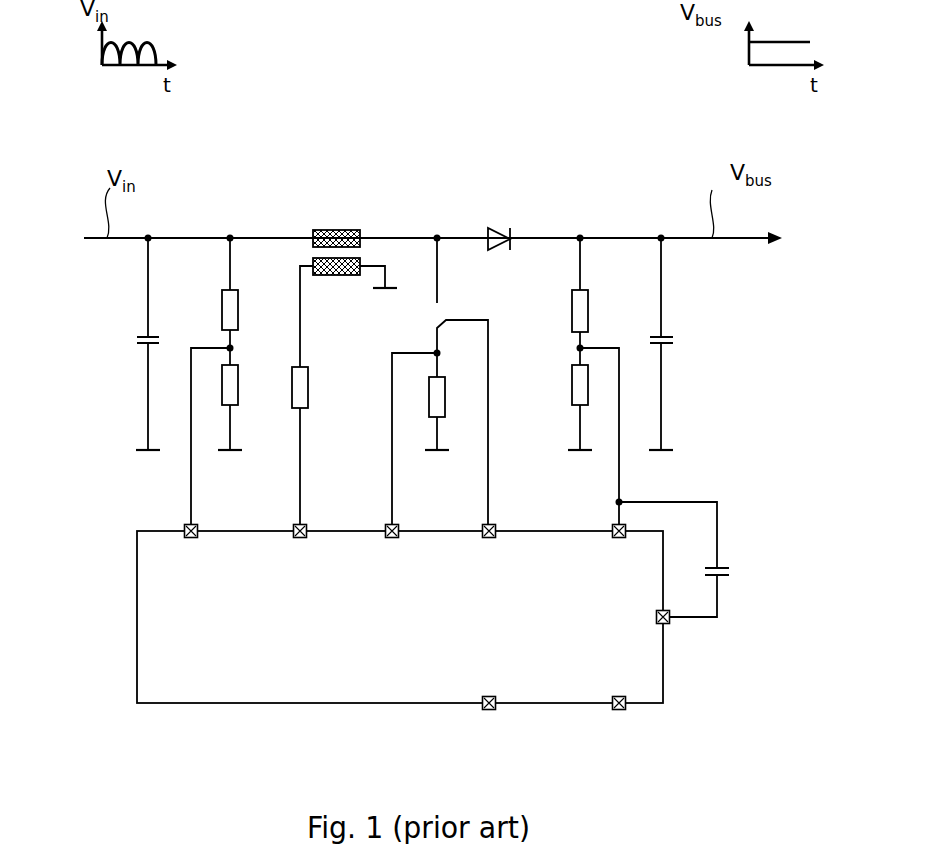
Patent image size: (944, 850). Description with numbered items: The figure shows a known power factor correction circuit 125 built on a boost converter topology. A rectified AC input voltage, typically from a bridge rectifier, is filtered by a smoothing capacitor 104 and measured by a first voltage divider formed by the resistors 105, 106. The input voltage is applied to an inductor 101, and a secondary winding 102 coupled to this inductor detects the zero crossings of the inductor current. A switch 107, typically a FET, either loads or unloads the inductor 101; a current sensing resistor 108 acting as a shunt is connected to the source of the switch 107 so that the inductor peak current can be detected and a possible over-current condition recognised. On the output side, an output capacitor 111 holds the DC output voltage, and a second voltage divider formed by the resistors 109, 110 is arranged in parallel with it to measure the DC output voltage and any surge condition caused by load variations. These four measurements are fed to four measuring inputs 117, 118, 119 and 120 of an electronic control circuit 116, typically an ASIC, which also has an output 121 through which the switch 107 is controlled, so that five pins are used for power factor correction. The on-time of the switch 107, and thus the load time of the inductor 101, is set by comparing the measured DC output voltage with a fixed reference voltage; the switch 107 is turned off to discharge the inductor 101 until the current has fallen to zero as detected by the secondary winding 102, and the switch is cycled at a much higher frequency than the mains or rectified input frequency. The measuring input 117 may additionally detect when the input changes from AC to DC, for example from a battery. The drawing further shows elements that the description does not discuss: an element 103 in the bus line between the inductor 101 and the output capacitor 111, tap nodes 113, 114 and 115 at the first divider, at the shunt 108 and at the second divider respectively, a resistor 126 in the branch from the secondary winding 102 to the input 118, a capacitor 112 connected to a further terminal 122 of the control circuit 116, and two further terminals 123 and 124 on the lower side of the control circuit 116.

The inductor 101 is at (342, 230).
The secondary winding 102 is at (337, 276).
The diode 103 is at (500, 228).
The smoothing capacitor 104 is at (137, 340).
The voltage divider resistor 105 is at (222, 300).
The voltage divider resistor 106 is at (237, 405).
The switch 107 is at (445, 315).
The current sensing resistor 108 is at (445, 405).
The second voltage divider resistor 109 is at (588, 310).
The second voltage divider resistor 110 is at (572, 385).
The output capacitor 111 is at (673, 340).
The compensation capacitor 112 is at (729, 572).
The input voltage sense node 113 is at (230, 348).
The current sense node 114 is at (437, 353).
The output voltage sense node 115 is at (580, 348).
The electronic control circuit 116 is at (137, 620).
The measuring input 117 is at (191, 538).
The measuring input 118 is at (300, 538).
The measuring input 119 is at (392, 538).
The measuring input 120 is at (619, 538).
The output 121 is at (489, 538).
The compensation terminal 122 is at (656, 617).
The ground terminal 123 is at (489, 710).
The supply terminal 124 is at (619, 710).
The power factor correction circuit 125 is at (458, 163).
The resistor 126 is at (308, 388).